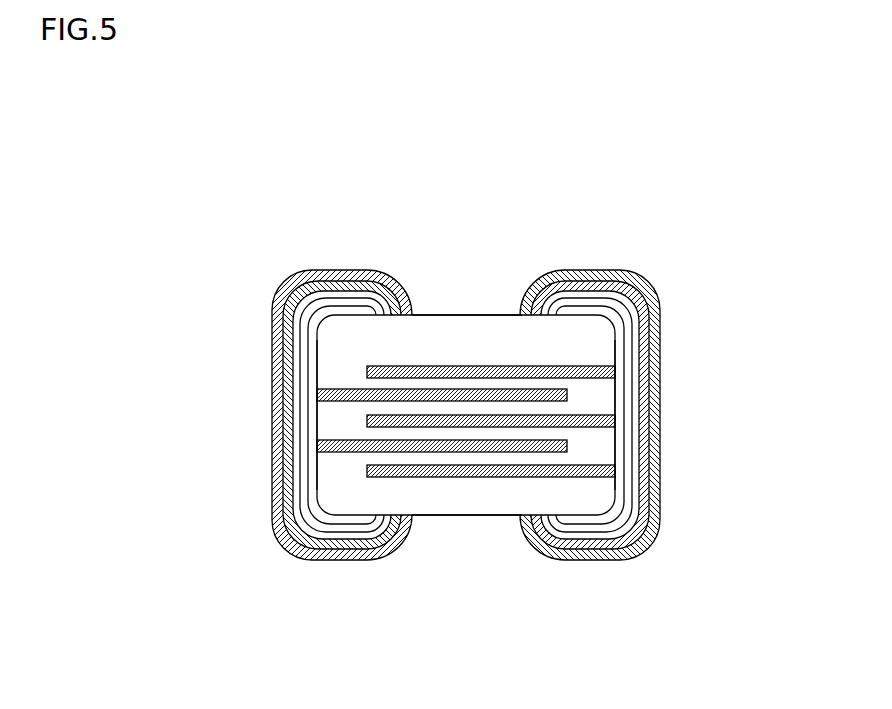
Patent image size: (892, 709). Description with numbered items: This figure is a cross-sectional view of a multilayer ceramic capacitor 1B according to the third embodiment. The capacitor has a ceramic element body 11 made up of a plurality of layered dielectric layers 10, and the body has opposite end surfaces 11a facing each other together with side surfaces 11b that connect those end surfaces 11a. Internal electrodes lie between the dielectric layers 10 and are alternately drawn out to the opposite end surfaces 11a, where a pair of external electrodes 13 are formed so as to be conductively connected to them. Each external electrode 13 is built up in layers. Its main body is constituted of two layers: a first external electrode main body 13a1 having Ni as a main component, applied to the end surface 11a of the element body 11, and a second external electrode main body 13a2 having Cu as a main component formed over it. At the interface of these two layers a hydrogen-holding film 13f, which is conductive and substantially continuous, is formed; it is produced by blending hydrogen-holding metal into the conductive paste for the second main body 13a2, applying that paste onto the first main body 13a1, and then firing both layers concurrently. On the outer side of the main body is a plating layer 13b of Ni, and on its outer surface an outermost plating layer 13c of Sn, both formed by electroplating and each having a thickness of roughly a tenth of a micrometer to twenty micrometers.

The multilayer ceramic capacitor 1B is at (205, 150).
The dielectric layer 10 is at (400, 407).
The ceramic element body 11 is at (483, 312).
The end surface 11a is at (316, 463).
The side surface 11b is at (502, 313).
The external electrode 13 is at (158, 245).
The outermost plating layer 13c is at (285, 275).
The plating layer 13b is at (287, 290).
The external electrode main body 13a2 is at (292, 330).
The external electrode main body 13a1 is at (300, 345).
The hydrogen-holding film 13f is at (308, 375).